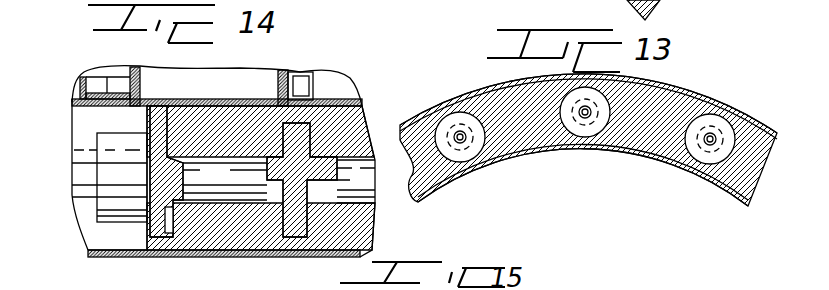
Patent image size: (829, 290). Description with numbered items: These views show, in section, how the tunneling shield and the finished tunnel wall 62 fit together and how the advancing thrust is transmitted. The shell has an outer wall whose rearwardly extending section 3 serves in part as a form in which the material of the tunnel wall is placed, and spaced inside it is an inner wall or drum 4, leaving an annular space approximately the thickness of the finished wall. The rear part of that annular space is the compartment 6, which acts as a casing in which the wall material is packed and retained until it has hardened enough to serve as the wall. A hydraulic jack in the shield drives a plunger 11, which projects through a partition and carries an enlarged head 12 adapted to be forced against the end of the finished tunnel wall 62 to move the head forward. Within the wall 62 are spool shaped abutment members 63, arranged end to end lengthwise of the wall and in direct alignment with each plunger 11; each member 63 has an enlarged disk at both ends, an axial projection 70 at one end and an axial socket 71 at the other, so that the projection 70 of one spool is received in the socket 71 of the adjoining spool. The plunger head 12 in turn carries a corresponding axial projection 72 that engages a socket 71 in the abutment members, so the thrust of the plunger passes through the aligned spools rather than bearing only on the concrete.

In FIG. 14, the outer wall section 3 is at (238, 253).
In FIG. 13, the outer wall section 3 is at (723, 108).
In FIG. 14, the inner wall or drum 4 is at (140, 243).
In FIG. 13, the inner wall or drum 4 is at (687, 172).
In FIG. 14, the rear compartment 6 is at (118, 238).
In FIG. 14, the plunger 11 is at (78, 172).
In FIG. 14, the enlarged head 12 is at (122, 177).
In FIG. 14, the tunnel wall 62 is at (357, 228).
In FIG. 13, the tunnel wall 62 is at (537, 127).
In FIG. 14, the spool shaped abutment member 63 is at (225, 181).
In FIG. 14, the axial projection 70 is at (356, 175).
In FIG. 14, the axial opening or socket 71 is at (150, 112).
In FIG. 13, the axial opening or socket 71 is at (585, 118).
In FIG. 14, the axial projection of plunger head 72 is at (165, 182).